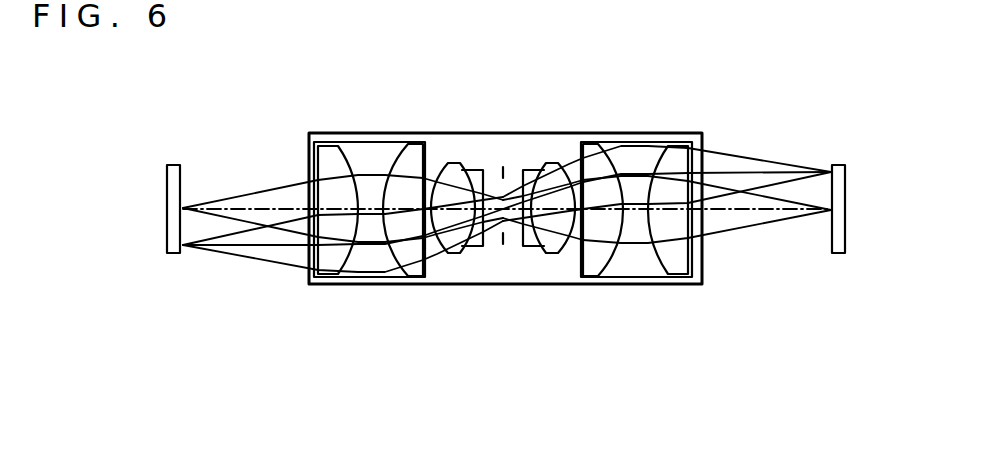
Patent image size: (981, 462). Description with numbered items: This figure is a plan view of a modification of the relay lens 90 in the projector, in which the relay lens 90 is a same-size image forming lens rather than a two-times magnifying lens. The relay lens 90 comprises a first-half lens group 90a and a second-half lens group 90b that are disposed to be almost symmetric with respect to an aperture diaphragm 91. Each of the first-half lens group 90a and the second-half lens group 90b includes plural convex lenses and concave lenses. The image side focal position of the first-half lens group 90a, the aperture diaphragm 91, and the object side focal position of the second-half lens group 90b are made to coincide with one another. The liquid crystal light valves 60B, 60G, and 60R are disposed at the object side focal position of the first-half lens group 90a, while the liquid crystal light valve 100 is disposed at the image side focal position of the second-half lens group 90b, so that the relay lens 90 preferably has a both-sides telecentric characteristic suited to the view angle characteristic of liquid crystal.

The liquid crystal light valve 60R is at (183, 180).
The liquid crystal light valve 60G is at (183, 180).
The liquid crystal light valve 60B is at (182, 135).
The relay lens 90 is at (497, 133).
The first-half lens group 90a is at (373, 311).
The second-half lens group 90b is at (640, 311).
The aperture diaphragm 91 is at (503, 247).
The liquid crystal light valve 100 is at (837, 164).